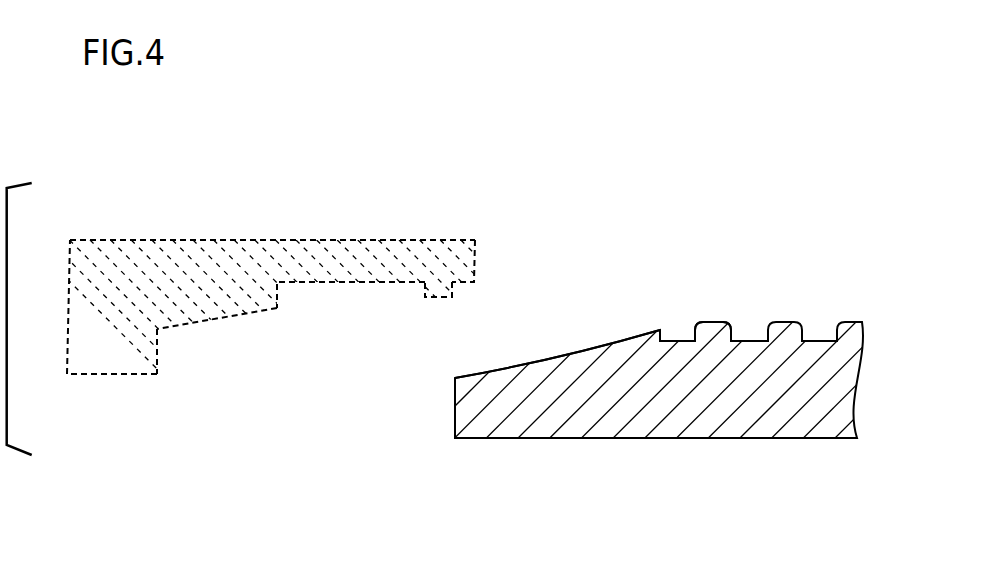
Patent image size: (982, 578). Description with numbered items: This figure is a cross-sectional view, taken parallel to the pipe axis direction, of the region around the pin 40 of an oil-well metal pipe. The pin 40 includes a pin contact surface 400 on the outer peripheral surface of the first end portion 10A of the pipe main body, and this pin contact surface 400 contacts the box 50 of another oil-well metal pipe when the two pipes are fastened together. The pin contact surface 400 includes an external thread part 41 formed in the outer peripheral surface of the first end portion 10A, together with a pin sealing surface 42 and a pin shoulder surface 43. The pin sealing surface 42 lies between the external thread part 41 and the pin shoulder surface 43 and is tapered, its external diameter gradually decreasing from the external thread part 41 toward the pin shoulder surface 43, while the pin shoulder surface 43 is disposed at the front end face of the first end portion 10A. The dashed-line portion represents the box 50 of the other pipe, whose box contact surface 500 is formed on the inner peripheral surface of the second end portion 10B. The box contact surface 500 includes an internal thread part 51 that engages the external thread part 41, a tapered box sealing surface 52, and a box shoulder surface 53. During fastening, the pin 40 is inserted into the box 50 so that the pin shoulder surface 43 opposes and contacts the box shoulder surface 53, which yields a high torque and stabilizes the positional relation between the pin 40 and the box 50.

The box 50 is at (237, 144).
The second end portion 10B is at (289, 216).
The internal thread part 51 is at (440, 300).
The box sealing surface 52 is at (231, 312).
The box shoulder surface 53 is at (160, 353).
The box contact surface 500 is at (285, 431).
The pin 40 is at (671, 146).
The pin contact surface 400 is at (599, 236).
The external thread part 41 is at (723, 322).
The pin sealing surface 42 is at (516, 364).
The pin shoulder surface 43 is at (455, 410).
The first end portion 10A is at (652, 467).